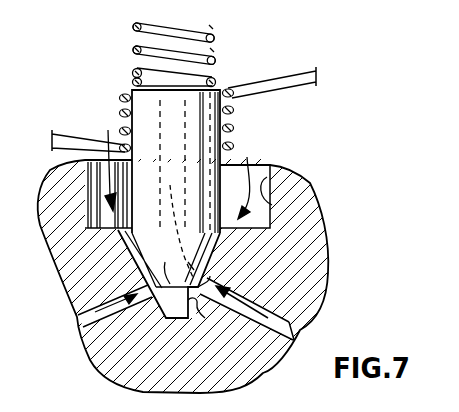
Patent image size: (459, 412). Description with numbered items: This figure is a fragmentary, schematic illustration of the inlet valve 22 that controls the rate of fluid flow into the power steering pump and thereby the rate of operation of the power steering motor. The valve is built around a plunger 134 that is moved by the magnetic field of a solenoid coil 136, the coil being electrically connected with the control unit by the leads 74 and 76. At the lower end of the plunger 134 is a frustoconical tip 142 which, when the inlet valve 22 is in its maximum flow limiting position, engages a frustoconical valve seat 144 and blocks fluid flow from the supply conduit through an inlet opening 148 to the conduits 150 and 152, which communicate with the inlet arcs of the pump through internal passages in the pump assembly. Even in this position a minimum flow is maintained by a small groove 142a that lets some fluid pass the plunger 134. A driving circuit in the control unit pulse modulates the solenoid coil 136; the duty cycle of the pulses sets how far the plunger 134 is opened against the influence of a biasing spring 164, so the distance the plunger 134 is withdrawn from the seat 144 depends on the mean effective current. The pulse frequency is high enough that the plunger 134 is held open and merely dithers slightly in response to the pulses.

The inlet valve 22 is at (330, 157).
The lead 74 is at (280, 80).
The lead 76 is at (67, 139).
The plunger 134 is at (162, 112).
The solenoid coil 136 is at (233, 128).
The frustoconical tip 142 is at (157, 307).
The groove 142a is at (176, 187).
The frustoconical valve seat 144 is at (205, 320).
The inlet opening 148 is at (275, 200).
The conduit 150 is at (78, 318).
The conduit 152 is at (297, 318).
The biasing spring 164 is at (133, 50).